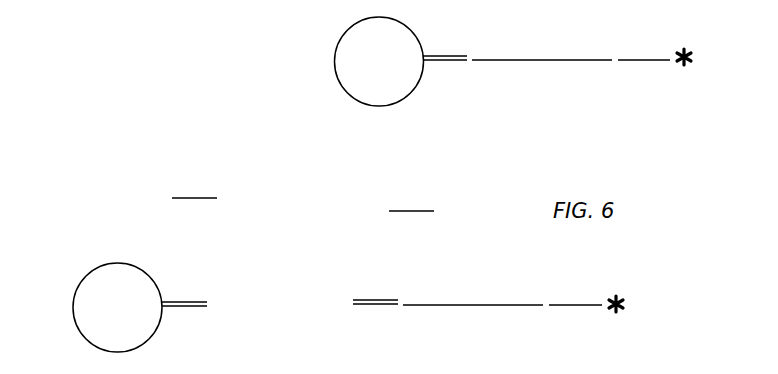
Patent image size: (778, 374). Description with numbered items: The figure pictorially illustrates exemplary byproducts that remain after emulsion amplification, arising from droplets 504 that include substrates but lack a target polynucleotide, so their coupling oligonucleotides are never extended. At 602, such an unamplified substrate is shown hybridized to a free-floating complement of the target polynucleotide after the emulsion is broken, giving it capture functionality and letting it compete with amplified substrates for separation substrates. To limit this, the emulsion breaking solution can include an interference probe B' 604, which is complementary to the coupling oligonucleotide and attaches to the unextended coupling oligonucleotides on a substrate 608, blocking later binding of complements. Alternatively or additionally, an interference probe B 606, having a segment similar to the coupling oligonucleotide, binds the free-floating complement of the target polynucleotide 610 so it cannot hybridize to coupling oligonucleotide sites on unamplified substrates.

The droplets 504 is at (88, 1).
The hybridization of unamplified substrate to free-floating complement 602 is at (532, 35).
The interference probe B' 604 is at (192, 182).
The interference probe B 606 is at (410, 182).
The substrate 608 is at (88, 262).
The free-floating complement of the target polynucleotide 610 is at (438, 283).